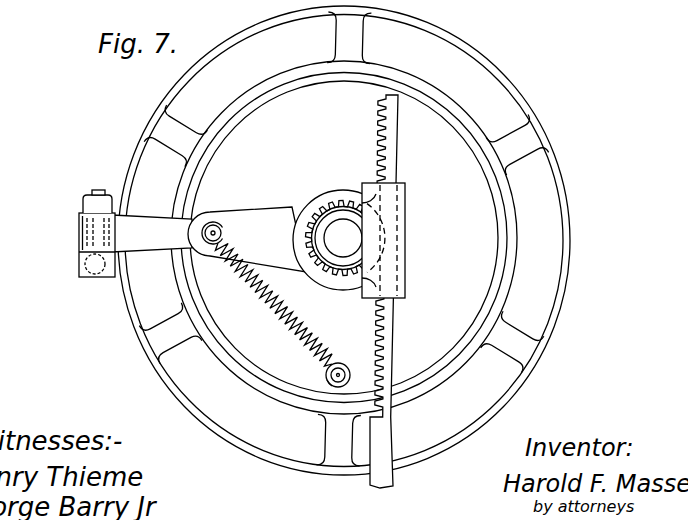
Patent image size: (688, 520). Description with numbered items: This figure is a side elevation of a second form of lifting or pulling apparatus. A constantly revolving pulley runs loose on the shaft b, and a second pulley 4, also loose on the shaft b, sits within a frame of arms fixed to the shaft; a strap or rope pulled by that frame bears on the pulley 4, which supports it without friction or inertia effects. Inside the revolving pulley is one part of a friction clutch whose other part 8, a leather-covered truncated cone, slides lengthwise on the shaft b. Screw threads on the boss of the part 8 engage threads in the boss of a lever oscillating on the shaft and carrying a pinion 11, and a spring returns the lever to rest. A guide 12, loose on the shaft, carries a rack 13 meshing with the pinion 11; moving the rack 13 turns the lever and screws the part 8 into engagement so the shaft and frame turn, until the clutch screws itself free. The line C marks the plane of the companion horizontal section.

The second pulley 4 is at (344, 240).
The section line C C is at (55, 234).
The rack 13 is at (379, 141).
The guide 12 is at (366, 230).
The pinion 11 is at (340, 219).
The shaft b is at (343, 238).
The part of friction-clutch 8 is at (338, 349).